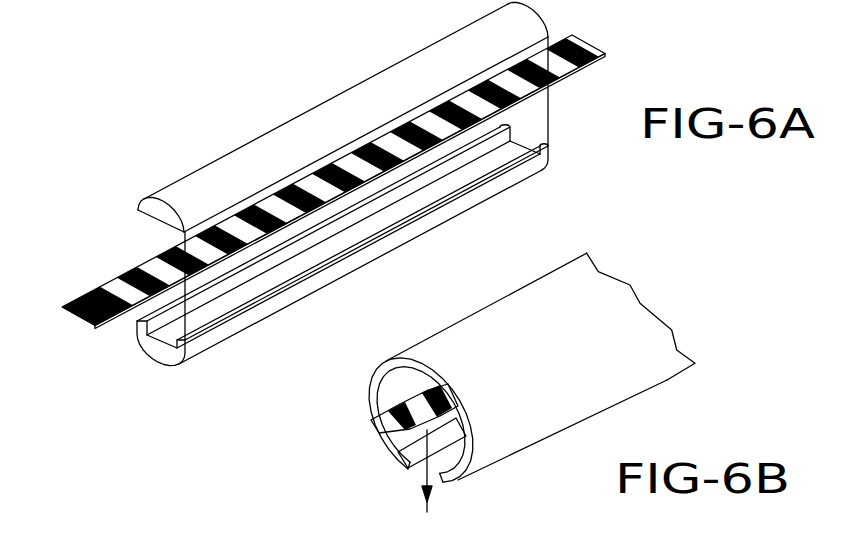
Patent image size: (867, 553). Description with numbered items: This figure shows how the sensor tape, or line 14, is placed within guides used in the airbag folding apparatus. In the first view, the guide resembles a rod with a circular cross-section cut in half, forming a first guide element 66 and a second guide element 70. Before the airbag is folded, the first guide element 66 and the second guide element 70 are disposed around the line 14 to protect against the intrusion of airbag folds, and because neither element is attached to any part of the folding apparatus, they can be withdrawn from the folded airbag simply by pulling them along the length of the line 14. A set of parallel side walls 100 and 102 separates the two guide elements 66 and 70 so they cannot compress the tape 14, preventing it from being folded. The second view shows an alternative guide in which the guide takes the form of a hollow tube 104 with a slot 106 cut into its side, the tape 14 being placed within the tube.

In FIG. 6A, the line 14 is at (105, 300).
In FIG. 6B, the line 14 is at (392, 425).
In FIG. 6A, the first guide element 66 is at (212, 170).
In FIG. 6A, the second guide element 70 is at (340, 243).
In FIG. 6A, the side wall 100 is at (520, 167).
In FIG. 6A, the side wall 102 is at (500, 135).
In FIG. 6B, the hollow tube 104 is at (612, 328).
In FIG. 6B, the slot 106 is at (420, 478).